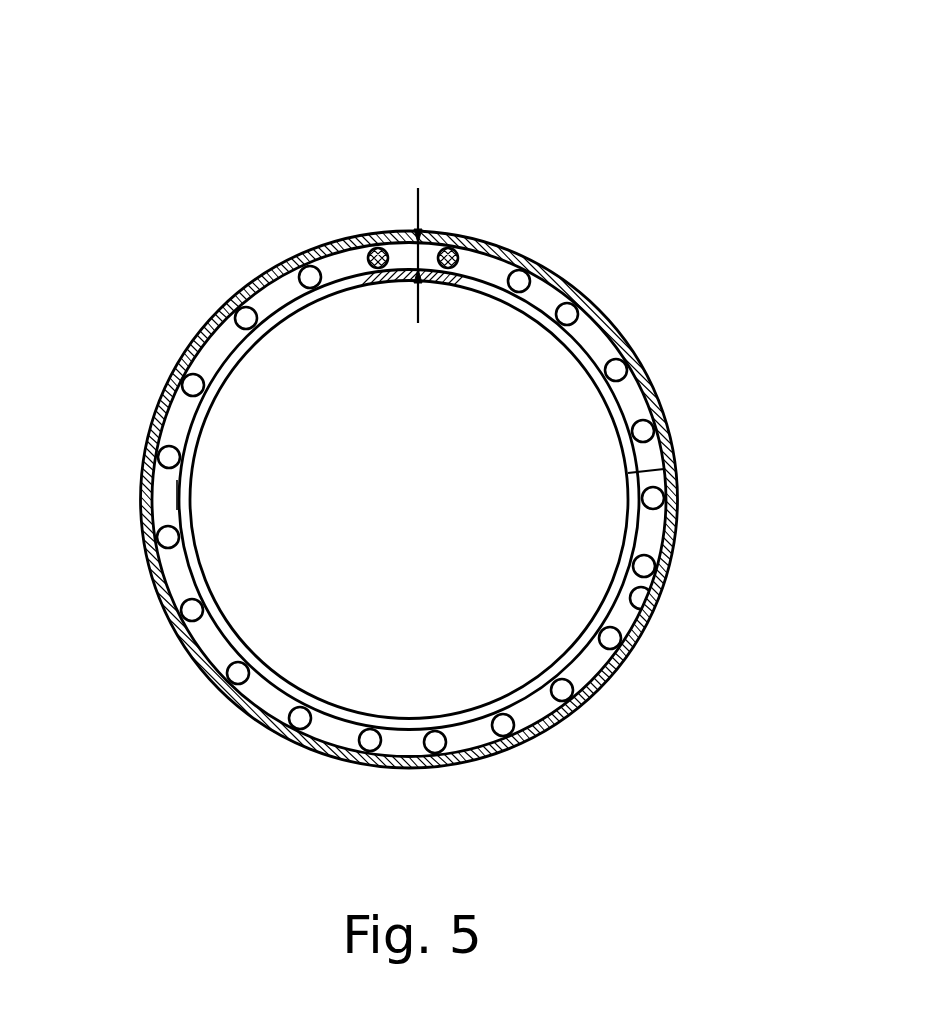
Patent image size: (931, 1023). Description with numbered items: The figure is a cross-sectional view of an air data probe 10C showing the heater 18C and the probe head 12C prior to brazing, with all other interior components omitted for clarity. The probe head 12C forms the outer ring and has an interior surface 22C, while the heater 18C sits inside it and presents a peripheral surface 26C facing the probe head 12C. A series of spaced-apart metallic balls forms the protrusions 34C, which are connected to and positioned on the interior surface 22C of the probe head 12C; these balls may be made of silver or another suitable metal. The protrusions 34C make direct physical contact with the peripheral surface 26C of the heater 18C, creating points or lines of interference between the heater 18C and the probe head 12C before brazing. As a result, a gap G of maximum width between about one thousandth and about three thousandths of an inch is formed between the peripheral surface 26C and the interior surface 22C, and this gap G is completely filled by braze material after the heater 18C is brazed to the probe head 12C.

The air data probe 10C is at (155, 108).
The probe head 12C is at (641, 634).
The heater 18C is at (630, 458).
The interior surface 22C is at (655, 588).
The peripheral surface 26C is at (662, 472).
The protrusions 34C is at (466, 297).
The gap G is at (418, 258).